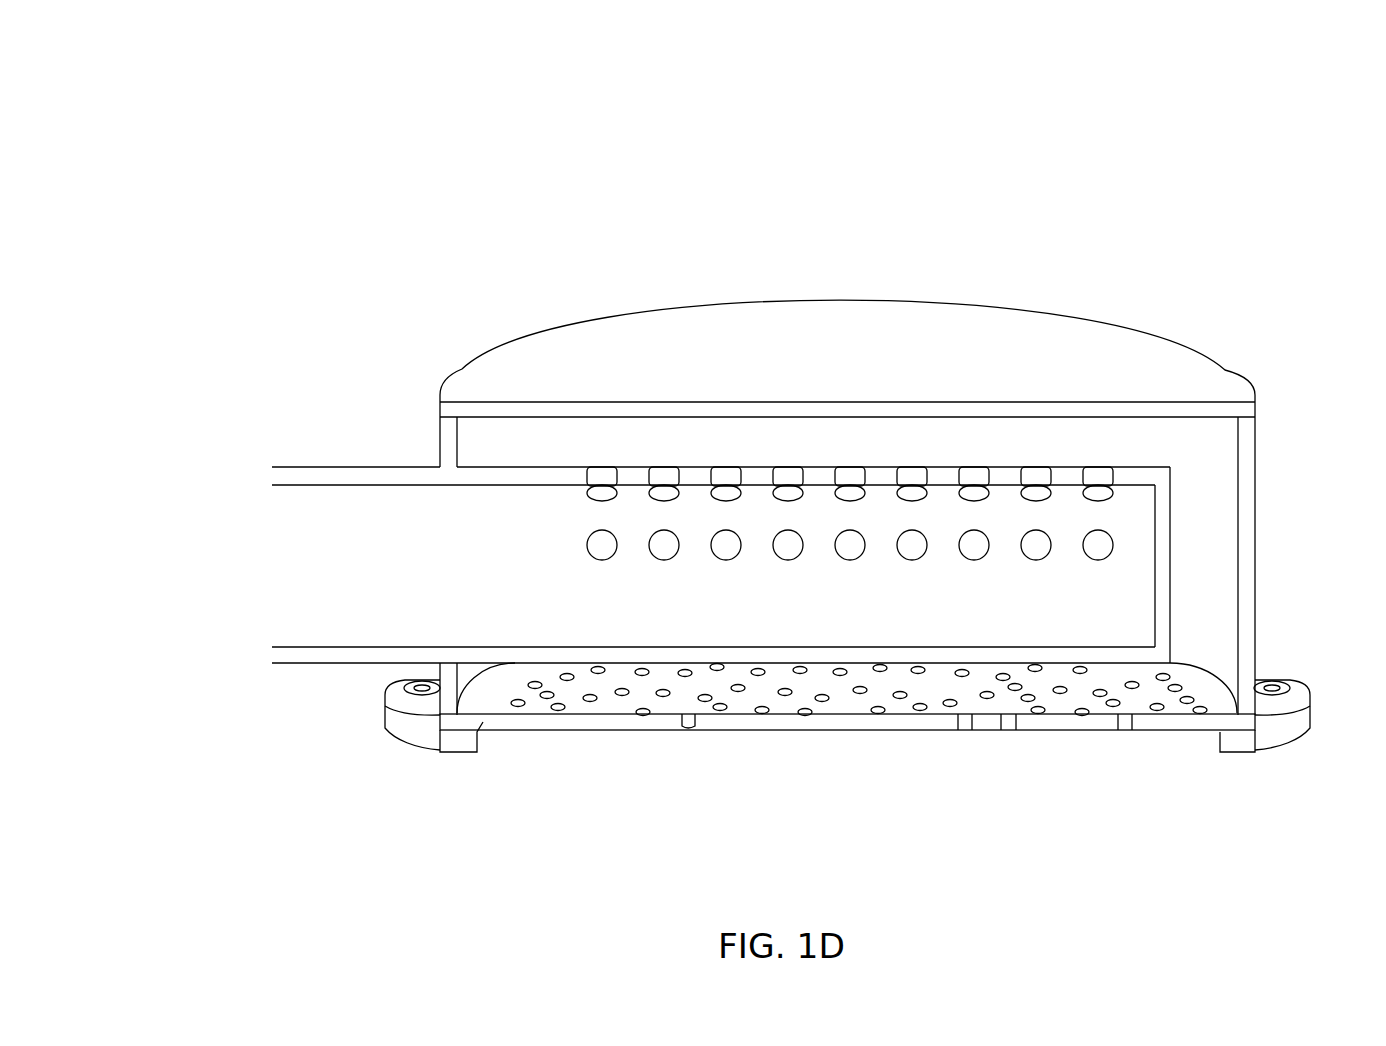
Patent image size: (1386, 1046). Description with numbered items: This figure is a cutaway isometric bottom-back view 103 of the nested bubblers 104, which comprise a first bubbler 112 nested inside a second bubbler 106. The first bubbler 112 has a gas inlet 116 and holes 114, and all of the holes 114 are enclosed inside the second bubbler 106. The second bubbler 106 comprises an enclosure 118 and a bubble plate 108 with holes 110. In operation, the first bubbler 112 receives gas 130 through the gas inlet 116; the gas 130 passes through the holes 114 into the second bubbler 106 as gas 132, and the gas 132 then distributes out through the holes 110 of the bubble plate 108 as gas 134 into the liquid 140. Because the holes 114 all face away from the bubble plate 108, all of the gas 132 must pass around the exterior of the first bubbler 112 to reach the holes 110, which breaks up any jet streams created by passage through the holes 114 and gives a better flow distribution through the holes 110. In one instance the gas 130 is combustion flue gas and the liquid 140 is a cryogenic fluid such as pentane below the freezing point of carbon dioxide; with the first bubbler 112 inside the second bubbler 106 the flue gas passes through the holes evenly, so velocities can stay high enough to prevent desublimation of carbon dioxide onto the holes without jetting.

The cutaway isometric bottom-back view 103 is at (212, 100).
The nested bubblers 104 is at (460, 372).
The second bubbler 106 is at (1222, 598).
The bubble plate 108 is at (1172, 723).
The holes 110 is at (1082, 716).
The first bubbler 112 is at (1166, 567).
The holes 114 is at (594, 543).
The gas inlet 116 is at (340, 465).
The enclosure 118 is at (1225, 375).
The gas 130 is at (290, 558).
The gas 132 is at (1201, 500).
The gas 134 is at (963, 676).
The liquid 140 is at (855, 848).